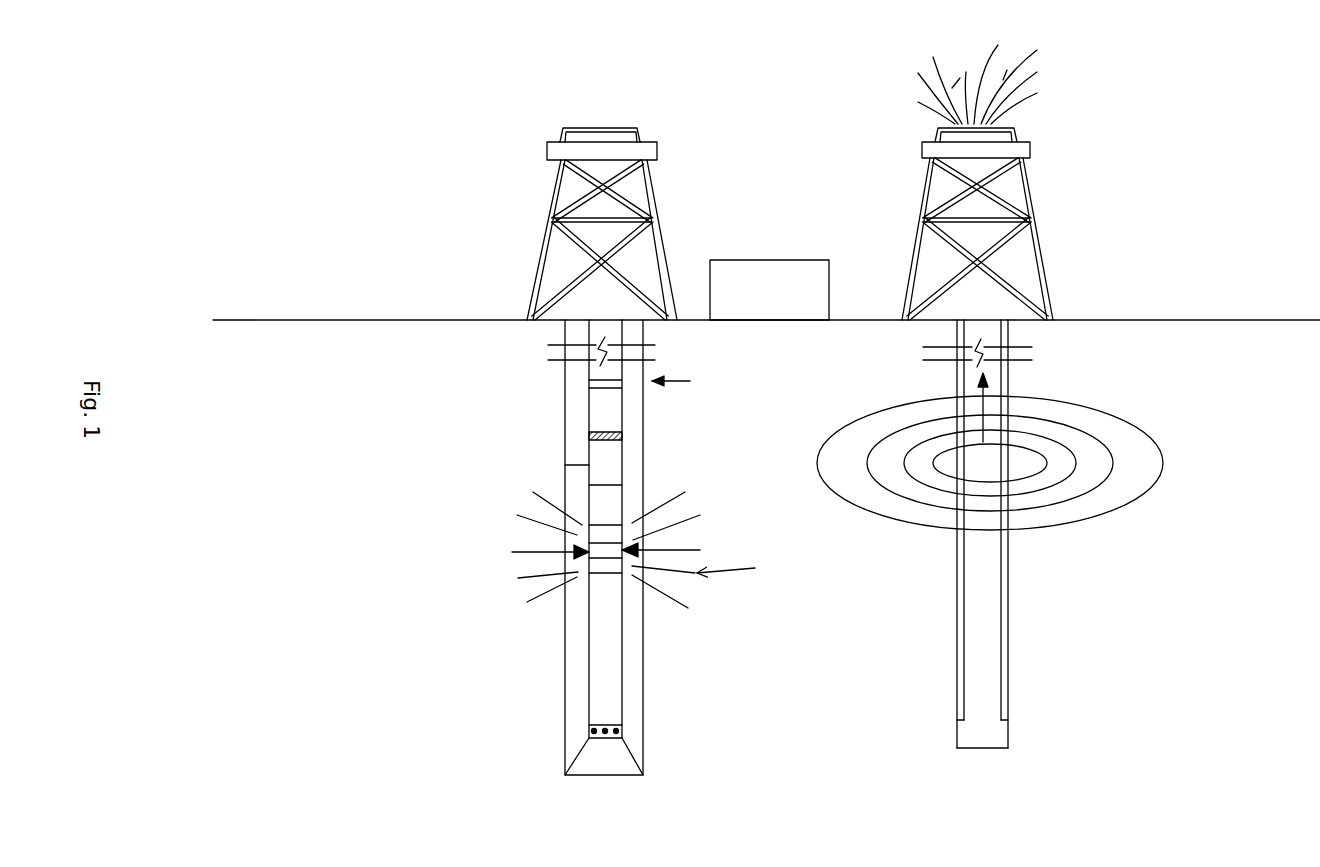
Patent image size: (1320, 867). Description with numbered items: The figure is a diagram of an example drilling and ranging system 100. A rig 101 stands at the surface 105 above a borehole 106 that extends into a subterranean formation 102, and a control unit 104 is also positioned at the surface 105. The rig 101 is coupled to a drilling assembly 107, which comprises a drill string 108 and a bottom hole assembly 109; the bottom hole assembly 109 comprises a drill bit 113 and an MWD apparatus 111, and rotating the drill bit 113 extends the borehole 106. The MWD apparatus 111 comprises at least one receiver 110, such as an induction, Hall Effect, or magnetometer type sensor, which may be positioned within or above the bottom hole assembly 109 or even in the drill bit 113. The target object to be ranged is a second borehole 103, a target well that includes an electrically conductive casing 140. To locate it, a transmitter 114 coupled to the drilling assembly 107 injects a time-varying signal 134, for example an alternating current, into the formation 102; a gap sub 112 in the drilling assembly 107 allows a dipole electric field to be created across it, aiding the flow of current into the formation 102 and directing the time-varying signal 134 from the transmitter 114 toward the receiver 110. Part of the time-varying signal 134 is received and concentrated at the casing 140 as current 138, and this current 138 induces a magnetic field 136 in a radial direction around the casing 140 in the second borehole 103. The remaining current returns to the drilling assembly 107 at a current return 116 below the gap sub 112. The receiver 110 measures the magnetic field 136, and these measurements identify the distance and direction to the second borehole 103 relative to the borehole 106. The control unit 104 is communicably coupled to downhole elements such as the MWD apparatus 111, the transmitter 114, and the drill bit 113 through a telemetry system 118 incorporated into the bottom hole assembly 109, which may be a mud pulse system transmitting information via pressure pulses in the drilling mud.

The drilling and ranging system 100 is at (449, 152).
The rig 101 is at (657, 152).
The subterranean formation 102 is at (784, 364).
The second borehole 103 is at (1008, 610).
The control unit 104 is at (789, 301).
The surface 105 is at (873, 320).
The borehole 106 is at (565, 417).
The drilling assembly 107 is at (537, 501).
The drill string 108 is at (565, 465).
The bottom hole assembly 109 is at (650, 545).
The receiver 110 is at (589, 731).
The MWD apparatus 111 is at (622, 645).
The gap sub 112 is at (628, 433).
The drill bit 113 is at (580, 753).
The transmitter 114 is at (577, 553).
The current return 116 is at (587, 382).
The telemetry system 118 is at (622, 512).
The time-varying signal 134 is at (719, 473).
The magnetic field 136 is at (907, 402).
The current 138 is at (995, 405).
The casing 140 is at (1000, 705).